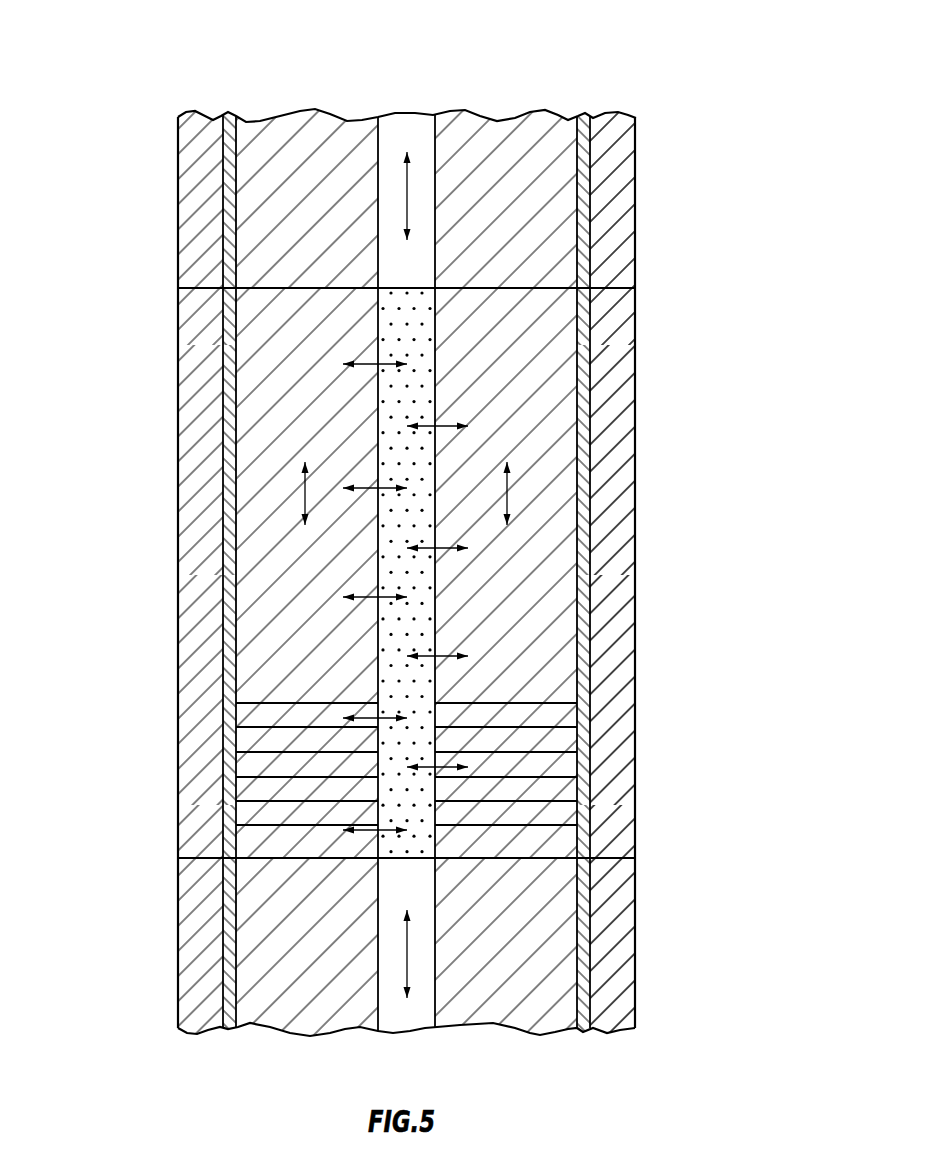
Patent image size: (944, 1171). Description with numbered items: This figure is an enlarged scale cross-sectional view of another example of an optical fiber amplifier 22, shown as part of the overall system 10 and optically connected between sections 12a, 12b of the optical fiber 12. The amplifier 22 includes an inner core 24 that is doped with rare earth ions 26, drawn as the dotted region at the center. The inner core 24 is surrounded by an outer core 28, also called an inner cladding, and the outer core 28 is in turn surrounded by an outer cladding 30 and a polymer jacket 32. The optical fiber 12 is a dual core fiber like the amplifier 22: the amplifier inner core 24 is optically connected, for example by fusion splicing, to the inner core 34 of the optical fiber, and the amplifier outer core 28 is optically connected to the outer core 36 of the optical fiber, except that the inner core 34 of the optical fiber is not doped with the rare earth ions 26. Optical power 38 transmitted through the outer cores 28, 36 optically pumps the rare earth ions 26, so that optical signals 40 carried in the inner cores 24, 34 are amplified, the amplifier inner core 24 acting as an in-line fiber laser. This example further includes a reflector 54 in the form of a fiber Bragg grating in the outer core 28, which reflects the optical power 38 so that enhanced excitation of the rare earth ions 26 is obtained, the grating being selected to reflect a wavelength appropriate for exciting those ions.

The electrochemical cell assembly 10 is at (690, 76).
The optical fiber 12 is at (170, 141).
The section of the optical fiber 12a is at (636, 192).
The section of the optical fiber 12b is at (637, 947).
The optical fiber amplifier 22 is at (648, 544).
The inner core 24 is at (377, 630).
The rare earth ions 26 is at (383, 557).
The outer core 28 is at (245, 389).
The outer cladding 30 is at (591, 355).
The polymer jacket 32 is at (177, 436).
The inner core of the optical fiber 34 is at (376, 188).
The outer core of the optical fiber 36 is at (565, 222).
The optical power 38 is at (510, 433).
The optical signals 40 is at (396, 168).
The reflector 54 is at (525, 703).